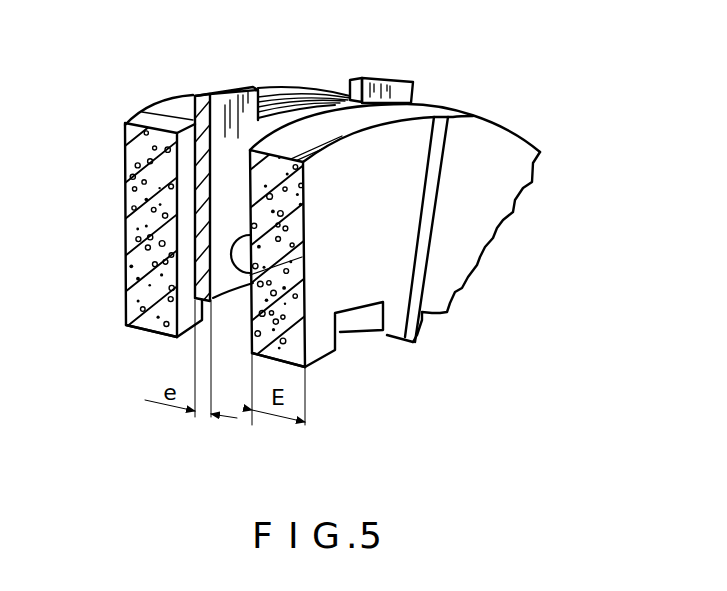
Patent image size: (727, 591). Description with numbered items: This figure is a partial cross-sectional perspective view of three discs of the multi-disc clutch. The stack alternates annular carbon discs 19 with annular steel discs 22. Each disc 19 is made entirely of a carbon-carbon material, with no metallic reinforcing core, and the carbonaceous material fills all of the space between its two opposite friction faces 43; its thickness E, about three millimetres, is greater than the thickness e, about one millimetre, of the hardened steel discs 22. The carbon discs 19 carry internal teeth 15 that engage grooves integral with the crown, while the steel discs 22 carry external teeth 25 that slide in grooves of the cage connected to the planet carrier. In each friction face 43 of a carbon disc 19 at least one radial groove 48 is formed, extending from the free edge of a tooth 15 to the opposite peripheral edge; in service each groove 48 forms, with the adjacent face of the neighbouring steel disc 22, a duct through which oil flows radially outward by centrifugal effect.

The disc 19 is at (138, 162).
The external teeth 25 is at (222, 90).
The disc 22 is at (286, 118).
The friction face 43 is at (303, 226).
The radial groove 48 is at (422, 220).
The internal teeth 15 is at (177, 340).